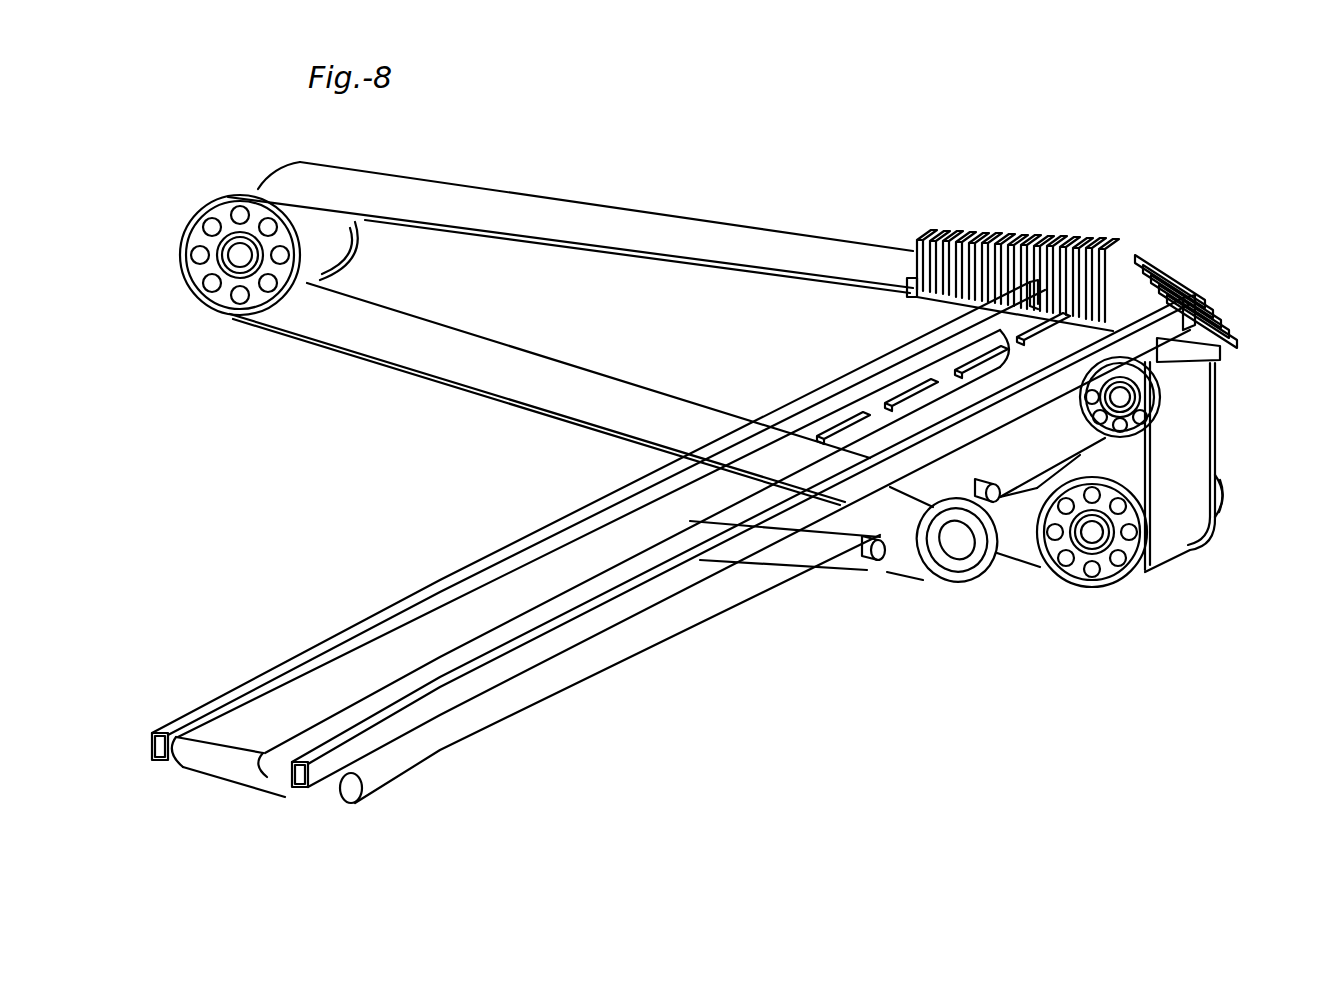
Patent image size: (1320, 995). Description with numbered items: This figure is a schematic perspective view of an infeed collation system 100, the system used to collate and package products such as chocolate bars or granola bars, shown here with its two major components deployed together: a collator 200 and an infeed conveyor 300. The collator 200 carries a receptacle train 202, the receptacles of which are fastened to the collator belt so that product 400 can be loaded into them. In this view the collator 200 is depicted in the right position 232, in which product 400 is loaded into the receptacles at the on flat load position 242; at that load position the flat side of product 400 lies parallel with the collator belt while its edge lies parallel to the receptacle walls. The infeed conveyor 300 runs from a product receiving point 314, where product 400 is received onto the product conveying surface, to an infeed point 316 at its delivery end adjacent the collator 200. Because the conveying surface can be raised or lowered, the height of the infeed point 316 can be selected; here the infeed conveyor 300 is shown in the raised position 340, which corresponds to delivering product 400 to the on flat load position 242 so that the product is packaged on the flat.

The infeed collation system 100 is at (556, 464).
The collator 200 is at (696, 194).
The receptacle train 202 is at (1031, 216).
The right position 232 is at (1203, 552).
The on flat load position 242 is at (1078, 262).
The infeed conveyor 300 is at (706, 628).
The product receiving point 314 is at (240, 735).
The infeed point 316 is at (1172, 265).
The raised position 340 is at (953, 599).
The product 400 is at (835, 425).